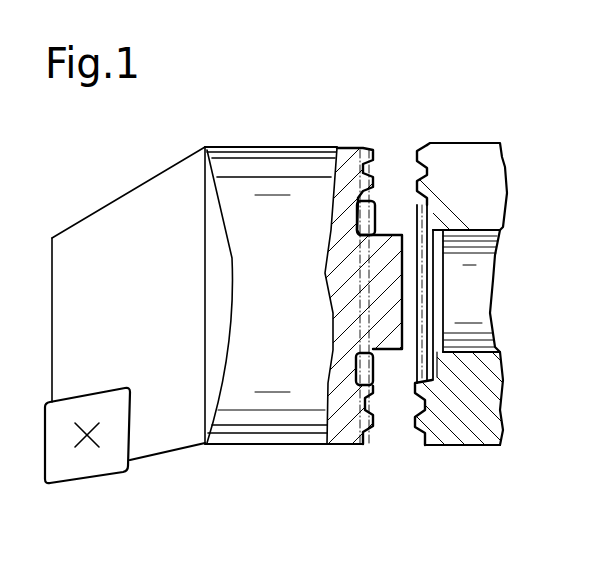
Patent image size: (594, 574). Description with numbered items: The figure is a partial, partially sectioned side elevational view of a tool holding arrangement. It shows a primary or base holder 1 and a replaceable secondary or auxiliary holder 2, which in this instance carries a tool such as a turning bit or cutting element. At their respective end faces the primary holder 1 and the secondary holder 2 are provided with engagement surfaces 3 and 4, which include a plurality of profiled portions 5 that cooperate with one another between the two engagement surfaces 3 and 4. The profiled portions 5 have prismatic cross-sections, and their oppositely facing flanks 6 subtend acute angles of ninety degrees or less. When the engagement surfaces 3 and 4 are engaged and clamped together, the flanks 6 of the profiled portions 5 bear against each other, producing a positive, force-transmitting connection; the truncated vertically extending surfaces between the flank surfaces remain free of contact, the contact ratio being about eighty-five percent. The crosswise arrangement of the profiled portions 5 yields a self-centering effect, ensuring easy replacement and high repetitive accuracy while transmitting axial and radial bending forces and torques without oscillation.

The primary holder 1 is at (501, 161).
The secondary holder 2 is at (262, 150).
The engagement surface 3 is at (421, 452).
The engagement surface 4 is at (378, 203).
The profiled portions 5 is at (366, 150).
The flanks 6 is at (420, 190).